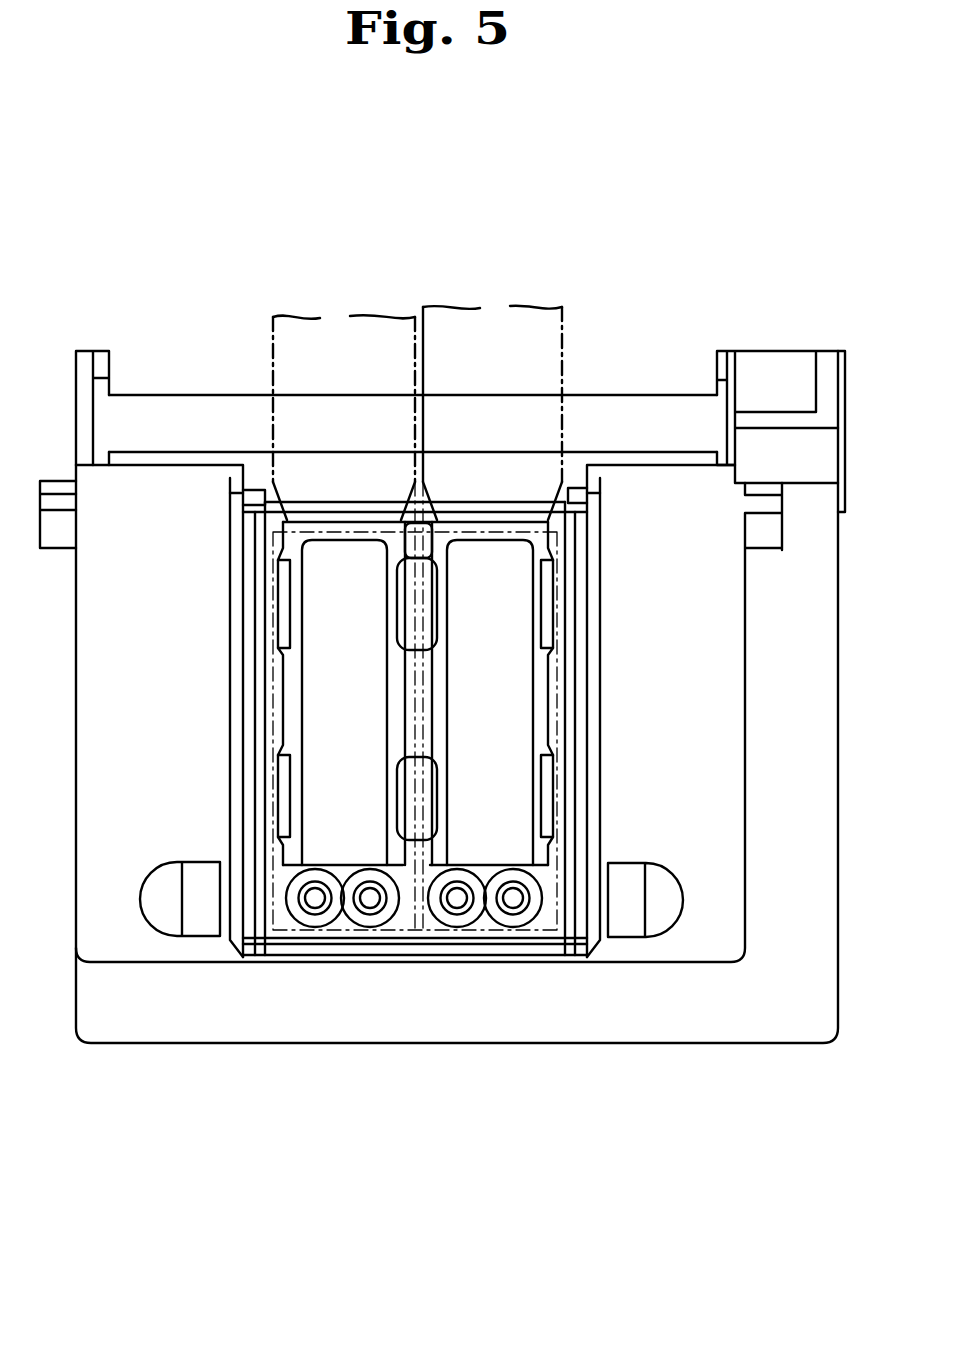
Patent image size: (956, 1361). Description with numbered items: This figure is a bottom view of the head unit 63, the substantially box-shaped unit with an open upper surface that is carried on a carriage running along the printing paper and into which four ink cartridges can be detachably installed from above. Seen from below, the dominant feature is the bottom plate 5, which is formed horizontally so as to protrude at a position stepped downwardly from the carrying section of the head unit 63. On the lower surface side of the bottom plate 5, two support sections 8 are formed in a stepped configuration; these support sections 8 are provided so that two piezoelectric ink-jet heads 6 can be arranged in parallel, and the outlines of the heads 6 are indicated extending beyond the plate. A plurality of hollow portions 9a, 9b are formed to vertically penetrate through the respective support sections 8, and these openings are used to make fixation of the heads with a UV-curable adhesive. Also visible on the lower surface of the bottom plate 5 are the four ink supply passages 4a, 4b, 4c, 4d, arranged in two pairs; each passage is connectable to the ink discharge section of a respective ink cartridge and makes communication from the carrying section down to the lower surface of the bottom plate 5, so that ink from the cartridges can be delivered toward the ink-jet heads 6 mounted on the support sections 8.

The head unit 63 is at (706, 1056).
The bottom plate 5 is at (586, 836).
The piezoelectric ink-jet head 6 is at (483, 358).
The support section 8 is at (317, 693).
The hollow portion 9a is at (430, 612).
The hollow portion 9b is at (288, 605).
The ink supply passage 4a is at (315, 905).
The ink supply passage 4b is at (370, 905).
The ink supply passage 4c is at (457, 905).
The ink supply passage 4d is at (513, 905).